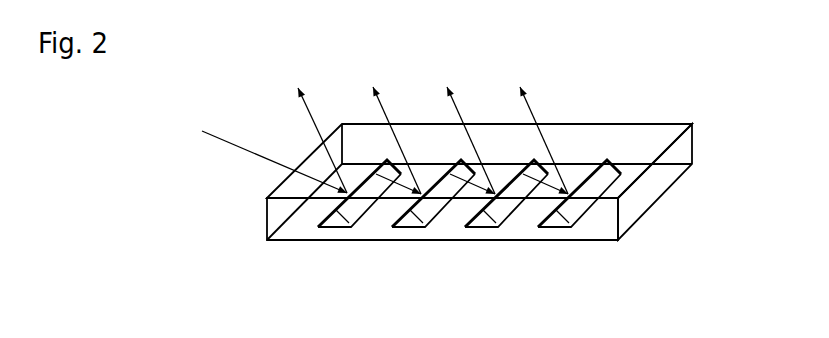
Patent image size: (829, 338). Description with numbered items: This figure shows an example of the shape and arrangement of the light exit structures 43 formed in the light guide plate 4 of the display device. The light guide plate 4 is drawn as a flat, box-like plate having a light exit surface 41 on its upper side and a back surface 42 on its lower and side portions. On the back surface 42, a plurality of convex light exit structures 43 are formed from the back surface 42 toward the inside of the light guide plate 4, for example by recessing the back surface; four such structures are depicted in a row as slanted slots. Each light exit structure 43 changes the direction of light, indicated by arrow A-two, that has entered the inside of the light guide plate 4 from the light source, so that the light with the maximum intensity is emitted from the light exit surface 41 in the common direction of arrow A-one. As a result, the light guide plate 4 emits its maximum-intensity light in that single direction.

The light guide plate 4 is at (437, 185).
The light exit surface 41 is at (636, 133).
The back surface 42 is at (638, 203).
The light exit structure 43 is at (360, 205).